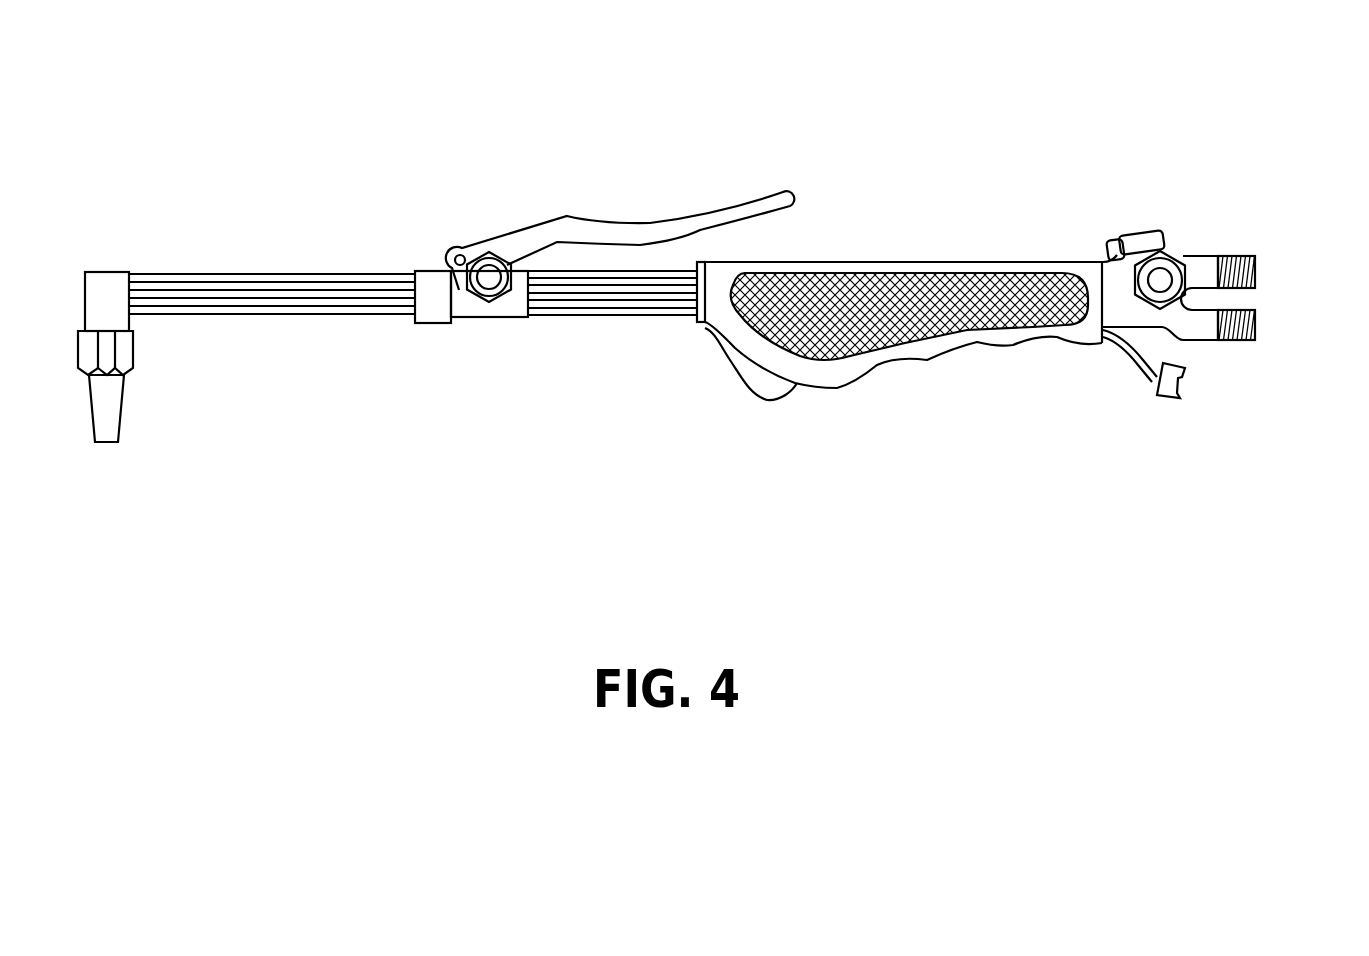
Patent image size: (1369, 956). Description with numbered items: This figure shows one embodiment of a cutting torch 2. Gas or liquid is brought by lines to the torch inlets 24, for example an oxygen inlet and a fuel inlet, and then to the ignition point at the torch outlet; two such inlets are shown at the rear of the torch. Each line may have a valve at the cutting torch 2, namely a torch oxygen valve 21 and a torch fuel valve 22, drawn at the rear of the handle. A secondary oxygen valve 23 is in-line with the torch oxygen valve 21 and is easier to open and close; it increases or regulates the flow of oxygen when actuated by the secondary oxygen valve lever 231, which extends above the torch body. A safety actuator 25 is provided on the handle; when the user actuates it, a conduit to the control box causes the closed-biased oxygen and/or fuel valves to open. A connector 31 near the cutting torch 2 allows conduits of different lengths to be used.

The cutting torch 2 is at (892, 168).
The torch oxygen valve 21 is at (1135, 235).
The torch fuel valve 22 is at (1162, 280).
The secondary oxygen valve 23 is at (447, 270).
The secondary oxygen valve lever 231 is at (700, 217).
The torch inlet 24 is at (1257, 272).
The safety actuator 25 is at (772, 401).
The connector 31 is at (1165, 403).